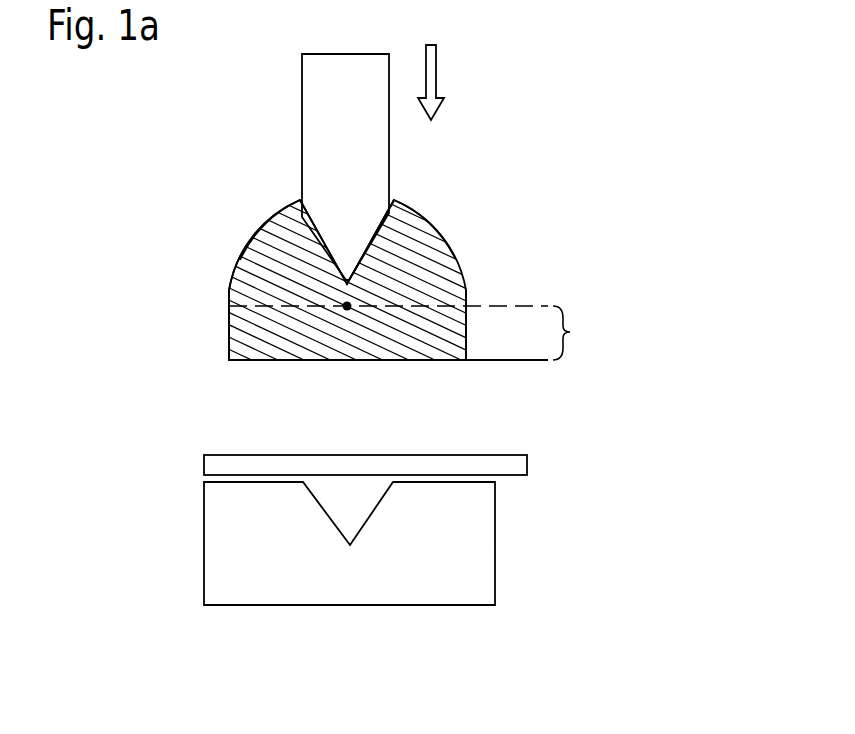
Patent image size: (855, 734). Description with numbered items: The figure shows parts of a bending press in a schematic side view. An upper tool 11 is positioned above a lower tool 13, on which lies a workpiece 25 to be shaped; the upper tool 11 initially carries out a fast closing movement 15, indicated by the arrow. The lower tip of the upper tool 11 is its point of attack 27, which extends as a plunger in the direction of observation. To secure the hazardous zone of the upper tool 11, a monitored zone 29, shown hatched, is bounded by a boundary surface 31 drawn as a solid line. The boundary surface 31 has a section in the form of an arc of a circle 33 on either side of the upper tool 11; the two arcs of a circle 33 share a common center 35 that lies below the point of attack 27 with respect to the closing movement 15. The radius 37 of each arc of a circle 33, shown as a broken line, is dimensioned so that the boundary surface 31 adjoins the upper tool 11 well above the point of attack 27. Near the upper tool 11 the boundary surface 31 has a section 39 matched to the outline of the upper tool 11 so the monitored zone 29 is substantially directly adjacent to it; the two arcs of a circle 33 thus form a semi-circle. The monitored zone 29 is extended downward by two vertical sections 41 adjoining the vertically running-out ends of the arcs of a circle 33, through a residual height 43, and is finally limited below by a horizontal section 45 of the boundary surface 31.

The upper tool 11 is at (309, 77).
The lower tool 13 is at (208, 562).
The closing movement 15 is at (433, 59).
The workpiece 25 is at (204, 468).
The point of attack 27 is at (345, 280).
The monitored zone 29 is at (269, 249).
The boundary surface 31 is at (465, 265).
The arc of a circle 33 is at (269, 216).
The center 35 is at (347, 307).
The radius 37 is at (270, 305).
The section 39 is at (400, 236).
The vertical sections 41 is at (228, 340).
The residual height 43 is at (575, 333).
The horizontal section 45 is at (437, 360).